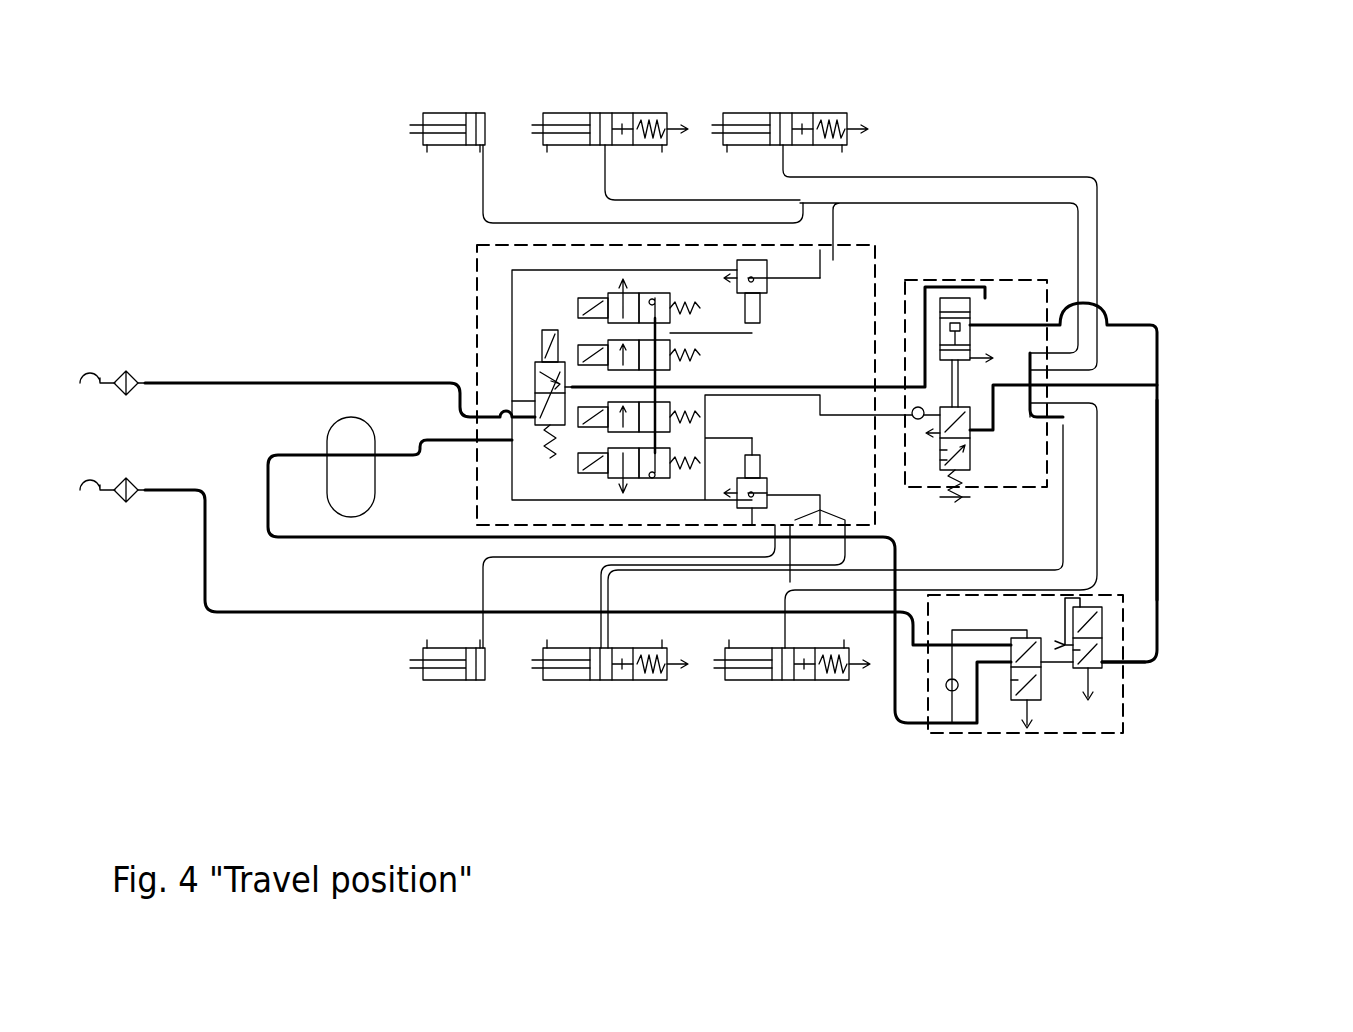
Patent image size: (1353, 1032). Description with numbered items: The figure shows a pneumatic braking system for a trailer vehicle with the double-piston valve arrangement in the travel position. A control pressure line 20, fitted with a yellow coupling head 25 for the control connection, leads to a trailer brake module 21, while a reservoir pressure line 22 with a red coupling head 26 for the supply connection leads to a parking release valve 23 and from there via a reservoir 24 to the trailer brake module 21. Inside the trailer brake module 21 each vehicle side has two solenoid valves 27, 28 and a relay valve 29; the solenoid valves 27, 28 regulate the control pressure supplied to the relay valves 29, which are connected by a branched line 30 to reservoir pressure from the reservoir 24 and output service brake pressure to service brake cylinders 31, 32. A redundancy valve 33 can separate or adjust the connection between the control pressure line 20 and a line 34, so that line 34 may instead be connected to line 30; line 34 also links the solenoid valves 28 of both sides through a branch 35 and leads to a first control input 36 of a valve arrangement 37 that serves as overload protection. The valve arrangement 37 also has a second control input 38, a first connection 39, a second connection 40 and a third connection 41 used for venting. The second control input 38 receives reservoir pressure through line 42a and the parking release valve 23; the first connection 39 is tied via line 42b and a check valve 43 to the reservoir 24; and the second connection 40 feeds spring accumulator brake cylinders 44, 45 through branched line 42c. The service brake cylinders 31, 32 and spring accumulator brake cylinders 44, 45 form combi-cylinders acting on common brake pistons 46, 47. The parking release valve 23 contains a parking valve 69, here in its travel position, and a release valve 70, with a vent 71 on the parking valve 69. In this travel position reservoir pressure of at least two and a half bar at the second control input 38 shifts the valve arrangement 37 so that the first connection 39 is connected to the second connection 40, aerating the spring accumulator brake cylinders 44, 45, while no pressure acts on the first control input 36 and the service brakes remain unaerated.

The control pressure line 20 is at (212, 378).
The trailer brake module 21 is at (480, 245).
The reservoir pressure line 22 is at (260, 613).
The parking release valve 23 is at (1105, 733).
The reservoir 24 is at (335, 486).
The yellow coupling head 25 is at (98, 345).
The red coupling head 26 is at (105, 527).
The solenoid valve 27 is at (607, 293).
The solenoid valve 28 is at (607, 340).
The relay valve 29 is at (735, 265).
The line 30 is at (405, 440).
The service brake cylinder 31 is at (600, 110).
The service brake cylinder 32 is at (778, 117).
The redundancy valve 33 is at (535, 372).
The line 34 is at (837, 383).
The branch 35 is at (660, 385).
The first control input 36 is at (985, 295).
The valve arrangement 37 is at (1023, 280).
The second control input 38 is at (970, 323).
The first connection 39 is at (937, 413).
The second connection 40 is at (972, 430).
The third connection 41 is at (934, 432).
The line 42a is at (1160, 490).
The line 42b is at (783, 490).
The line 42c is at (1030, 355).
The check valve 43 is at (913, 418).
The spring accumulator brake cylinder 44 is at (618, 117).
The spring accumulator brake cylinder 45 is at (803, 113).
The brake piston 46 is at (553, 122).
The brake piston 47 is at (733, 120).
The parking valve 69 is at (1105, 660).
The release valve 70 is at (1010, 690).
The vent 71 is at (1067, 665).